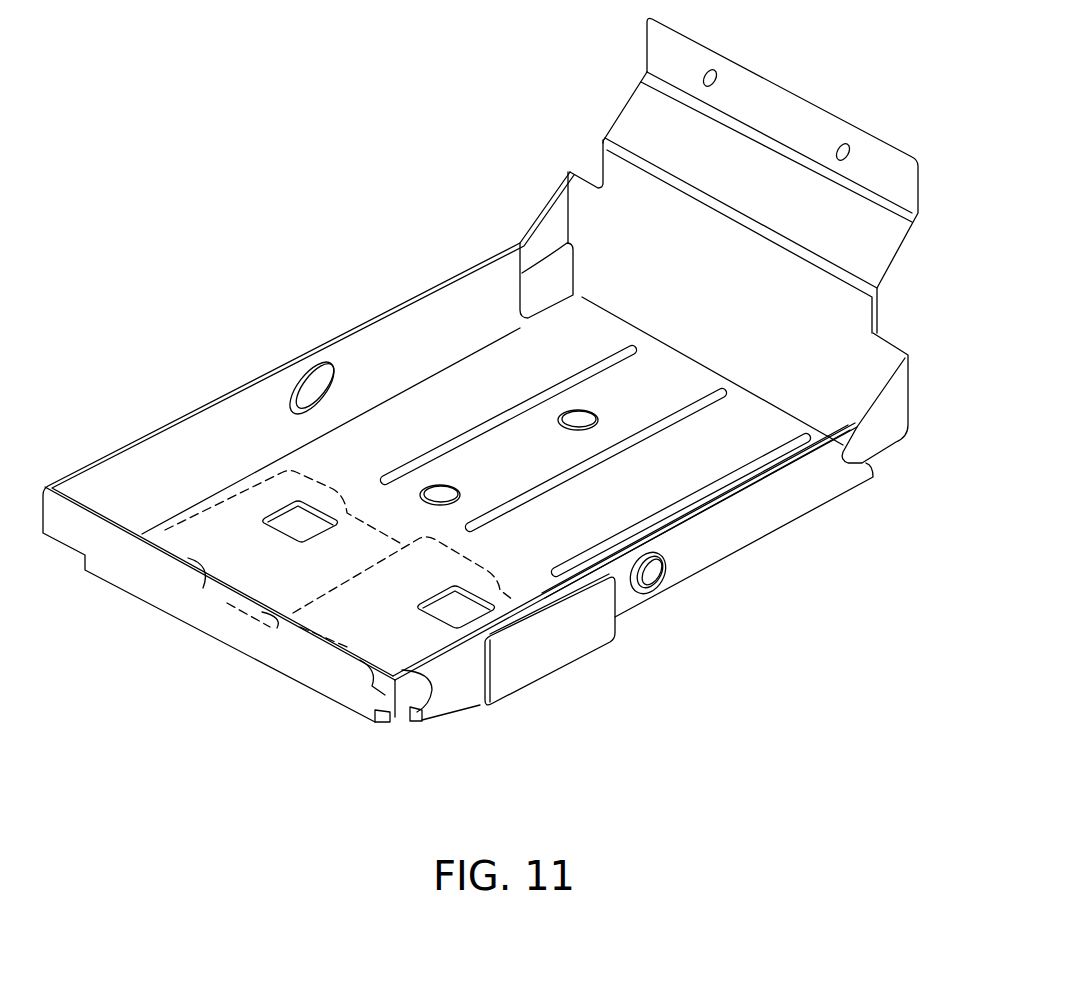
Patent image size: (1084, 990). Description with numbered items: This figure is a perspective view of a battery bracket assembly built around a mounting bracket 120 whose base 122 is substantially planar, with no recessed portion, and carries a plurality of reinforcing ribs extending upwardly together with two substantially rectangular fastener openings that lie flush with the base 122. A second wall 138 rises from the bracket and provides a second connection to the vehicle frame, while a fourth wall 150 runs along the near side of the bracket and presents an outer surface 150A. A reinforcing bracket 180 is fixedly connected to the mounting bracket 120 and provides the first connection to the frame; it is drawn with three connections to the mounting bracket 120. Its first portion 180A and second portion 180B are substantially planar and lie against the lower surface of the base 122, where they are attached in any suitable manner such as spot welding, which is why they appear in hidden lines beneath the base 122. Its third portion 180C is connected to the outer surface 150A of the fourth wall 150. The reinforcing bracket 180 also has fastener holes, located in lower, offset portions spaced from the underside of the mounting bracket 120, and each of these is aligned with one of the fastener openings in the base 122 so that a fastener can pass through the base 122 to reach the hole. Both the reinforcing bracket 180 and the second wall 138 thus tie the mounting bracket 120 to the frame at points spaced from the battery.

The mounting bracket 120 is at (142, 610).
The base 122 is at (447, 390).
The second wall 138 is at (878, 313).
The fourth wall 150 is at (818, 482).
The outer surface 150A is at (728, 527).
The reinforcing bracket 180 is at (428, 606).
The first portion 180A is at (217, 527).
The second portion 180B is at (345, 613).
The third portion 180C is at (575, 633).